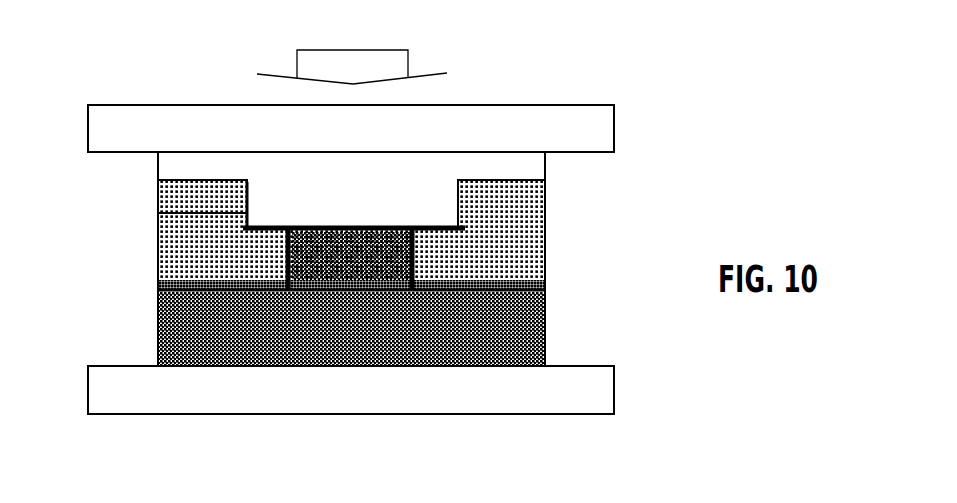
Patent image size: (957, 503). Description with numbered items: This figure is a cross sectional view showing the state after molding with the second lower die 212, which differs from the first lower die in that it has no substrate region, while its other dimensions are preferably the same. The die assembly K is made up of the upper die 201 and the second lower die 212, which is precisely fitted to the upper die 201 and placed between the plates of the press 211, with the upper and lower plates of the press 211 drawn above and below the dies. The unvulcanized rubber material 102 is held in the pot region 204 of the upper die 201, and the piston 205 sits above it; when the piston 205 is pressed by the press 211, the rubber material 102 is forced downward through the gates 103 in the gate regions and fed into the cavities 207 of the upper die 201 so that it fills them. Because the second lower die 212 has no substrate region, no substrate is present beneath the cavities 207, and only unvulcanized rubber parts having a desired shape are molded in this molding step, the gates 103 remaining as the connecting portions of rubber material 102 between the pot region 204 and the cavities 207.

The unvulcanized rubber material 102 is at (312, 225).
The gates 103 is at (285, 272).
The upper die 201 is at (502, 237).
The pot region 204 is at (158, 213).
The piston 205 is at (263, 197).
The cavities 207 is at (287, 291).
The press 211 is at (468, 110).
The second lower die 212 is at (502, 318).
The die assembly K is at (563, 203).